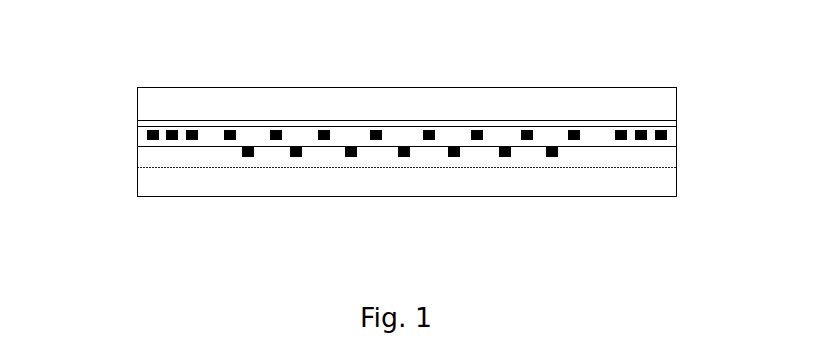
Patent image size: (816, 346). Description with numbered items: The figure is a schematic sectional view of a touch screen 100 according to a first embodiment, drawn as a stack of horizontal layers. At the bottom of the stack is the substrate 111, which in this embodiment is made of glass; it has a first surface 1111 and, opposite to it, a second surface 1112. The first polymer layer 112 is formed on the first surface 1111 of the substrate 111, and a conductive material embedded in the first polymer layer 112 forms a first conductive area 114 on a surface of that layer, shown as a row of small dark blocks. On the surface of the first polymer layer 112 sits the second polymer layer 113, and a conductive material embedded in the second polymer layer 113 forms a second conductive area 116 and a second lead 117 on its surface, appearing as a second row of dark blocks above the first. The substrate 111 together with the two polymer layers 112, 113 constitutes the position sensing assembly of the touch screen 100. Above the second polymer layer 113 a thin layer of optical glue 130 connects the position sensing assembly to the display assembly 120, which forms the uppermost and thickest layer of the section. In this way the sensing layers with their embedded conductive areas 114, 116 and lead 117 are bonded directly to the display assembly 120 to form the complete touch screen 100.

The touch screen 100 is at (333, 52).
The display assembly 120 is at (577, 95).
The optical glue 130 is at (677, 125).
The second polymer layer 113 is at (136, 136).
The second lead 117 is at (166, 133).
The second conductive area 116 is at (372, 135).
The first polymer layer 112 is at (135, 157).
The first conductive area 114 is at (405, 155).
The substrate 111 is at (677, 182).
The second surface 1112 is at (582, 167).
The first surface 1111 is at (510, 195).